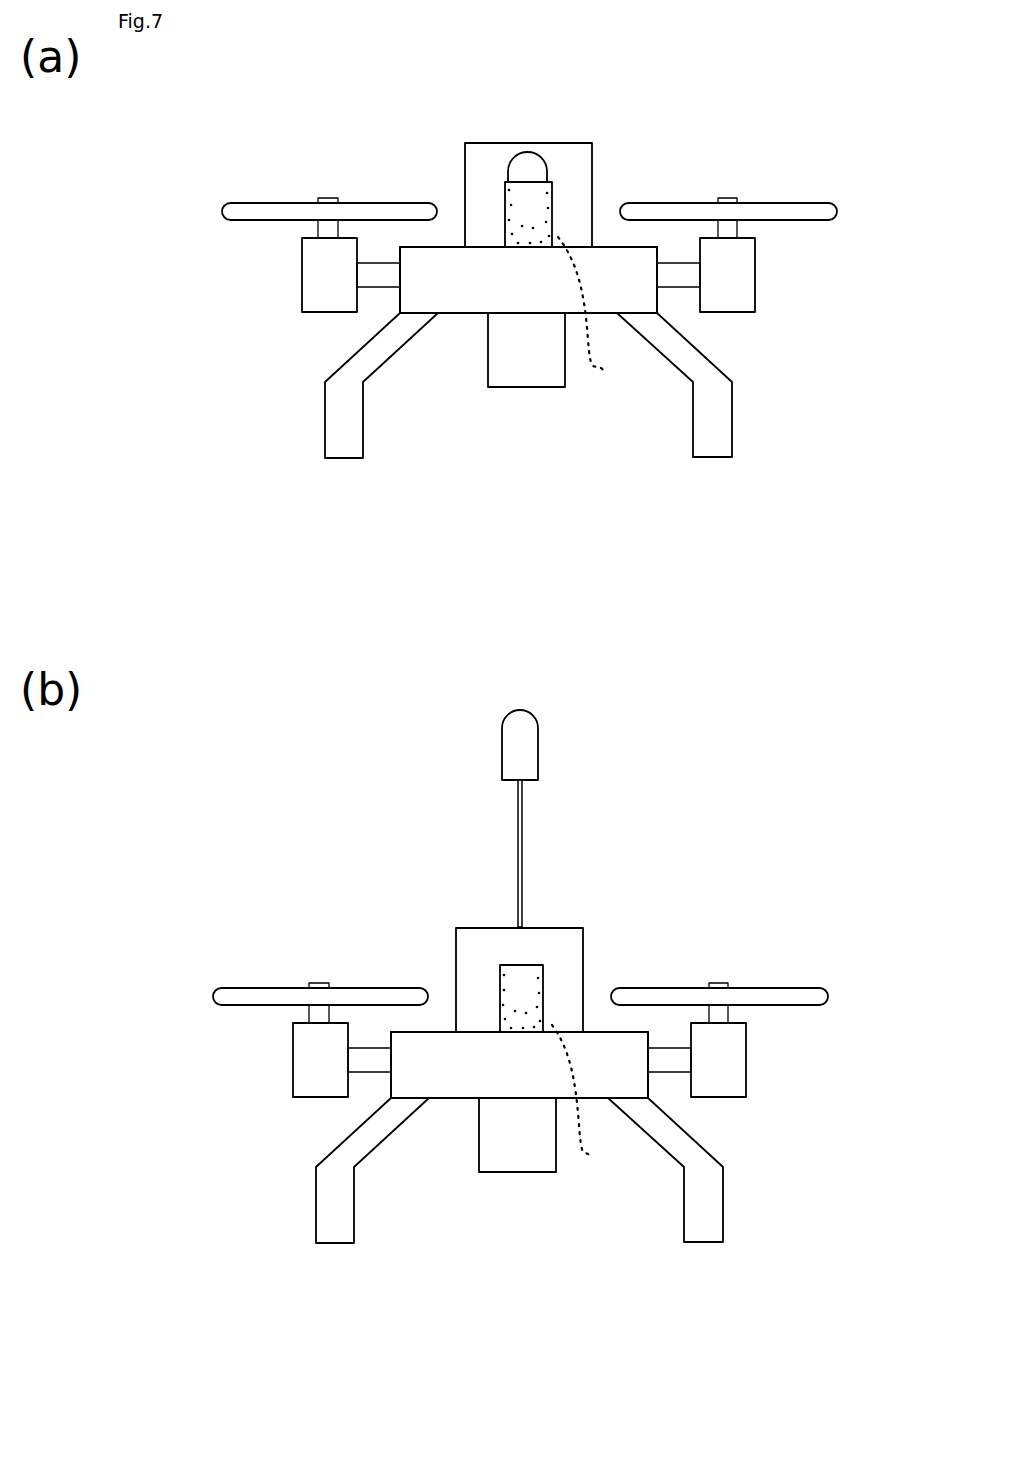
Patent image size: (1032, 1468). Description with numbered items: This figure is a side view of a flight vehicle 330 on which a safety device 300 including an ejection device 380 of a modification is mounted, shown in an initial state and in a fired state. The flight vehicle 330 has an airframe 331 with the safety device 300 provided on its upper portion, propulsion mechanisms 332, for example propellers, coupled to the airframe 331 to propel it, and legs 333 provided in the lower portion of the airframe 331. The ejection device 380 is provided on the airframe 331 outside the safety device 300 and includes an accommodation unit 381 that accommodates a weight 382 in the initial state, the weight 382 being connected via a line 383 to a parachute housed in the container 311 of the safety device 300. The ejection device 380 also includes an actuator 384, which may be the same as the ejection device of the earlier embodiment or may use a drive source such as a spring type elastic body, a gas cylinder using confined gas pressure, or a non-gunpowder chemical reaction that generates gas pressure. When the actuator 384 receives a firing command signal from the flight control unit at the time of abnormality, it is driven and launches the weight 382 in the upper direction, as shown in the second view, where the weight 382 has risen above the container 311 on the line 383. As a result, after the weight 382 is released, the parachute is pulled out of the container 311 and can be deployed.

The safety device 300 is at (593, 142).
The container 311 is at (480, 168).
The flight vehicle 330 is at (527, 405).
The airframe 331 is at (458, 313).
The propulsion mechanism 332 is at (862, 148).
The leg 333 is at (348, 440).
The ejection device 380 is at (552, 193).
The accommodation unit 381 is at (510, 199).
The weight 382 is at (525, 167).
The line 383 is at (520, 853).
The actuator 384 is at (606, 728).